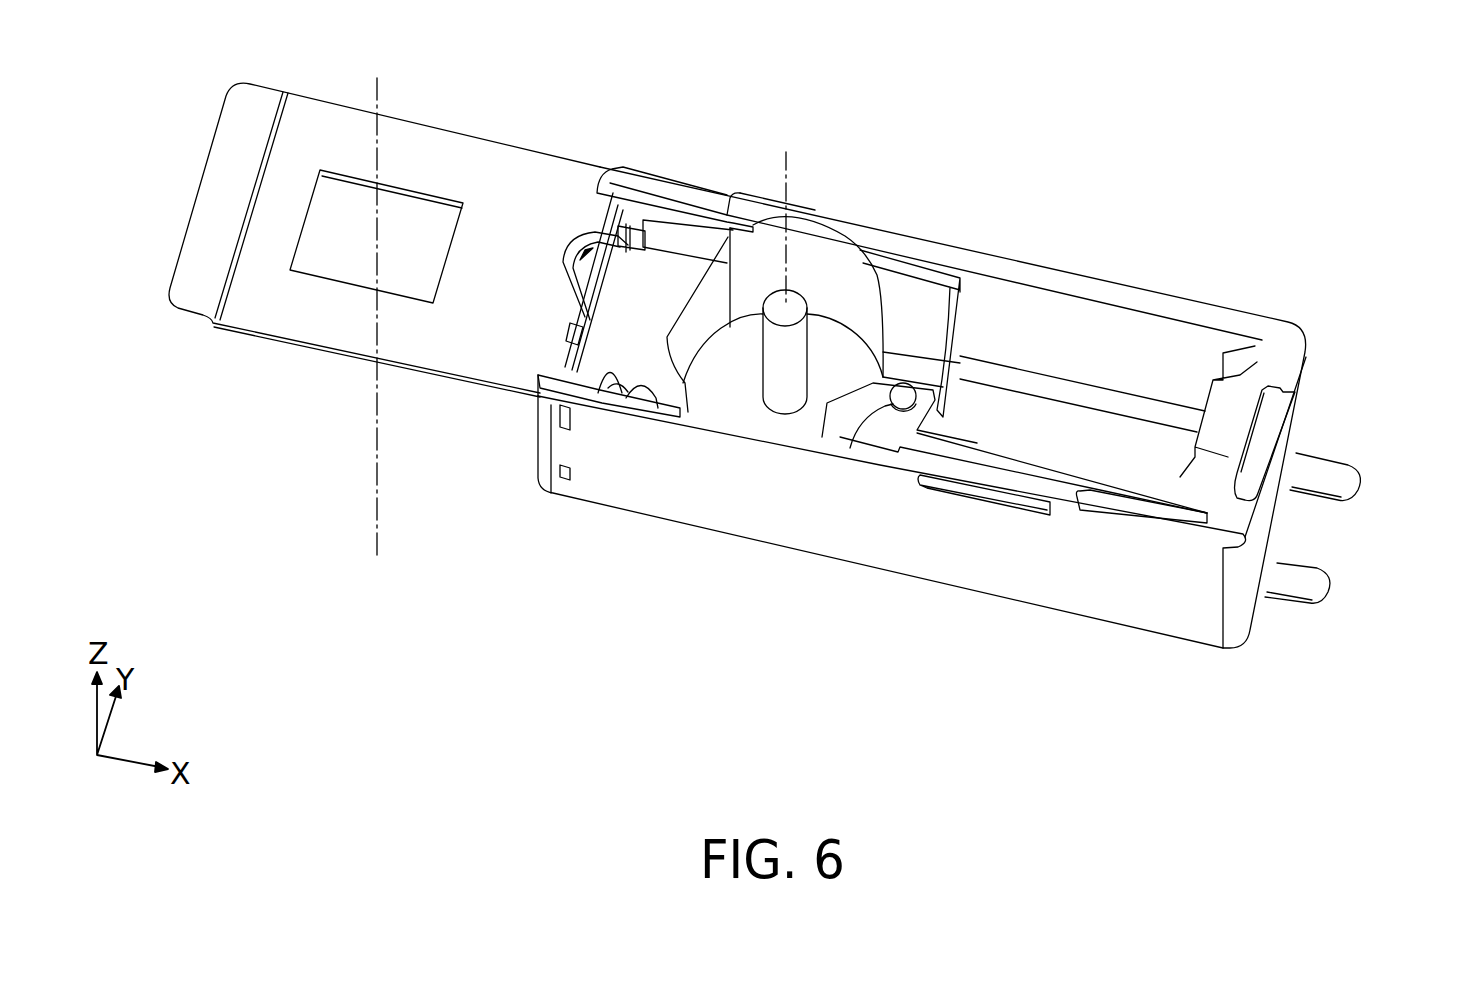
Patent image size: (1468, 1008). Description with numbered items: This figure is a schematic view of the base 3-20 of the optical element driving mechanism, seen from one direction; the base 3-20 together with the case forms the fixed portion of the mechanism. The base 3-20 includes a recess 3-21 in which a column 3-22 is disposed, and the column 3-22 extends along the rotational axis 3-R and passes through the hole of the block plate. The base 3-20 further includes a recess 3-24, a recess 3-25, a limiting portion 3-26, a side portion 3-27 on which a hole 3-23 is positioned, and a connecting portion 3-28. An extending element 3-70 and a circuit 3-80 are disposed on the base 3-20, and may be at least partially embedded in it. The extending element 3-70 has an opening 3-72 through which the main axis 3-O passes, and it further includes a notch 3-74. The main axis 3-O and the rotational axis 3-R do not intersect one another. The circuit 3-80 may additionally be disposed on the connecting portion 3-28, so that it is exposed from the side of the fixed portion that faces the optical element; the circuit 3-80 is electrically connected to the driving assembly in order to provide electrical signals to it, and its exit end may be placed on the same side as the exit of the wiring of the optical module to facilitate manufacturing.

The base 3-20 is at (1215, 303).
The recess 3-21 is at (740, 393).
The column 3-22 is at (797, 307).
The hole 3-23 is at (620, 367).
The recess 3-24 is at (1088, 437).
The recess 3-25 is at (917, 377).
The limiting portion 3-26 is at (890, 407).
The side portion 3-27 is at (685, 282).
The connecting portion 3-28 is at (1238, 363).
The extending element 3-70 is at (230, 158).
The opening 3-72 is at (427, 222).
The notch 3-74 is at (612, 246).
The circuit 3-80 is at (1338, 470).
The main axis 3-O is at (376, 300).
The rotational axis 3-R is at (785, 211).